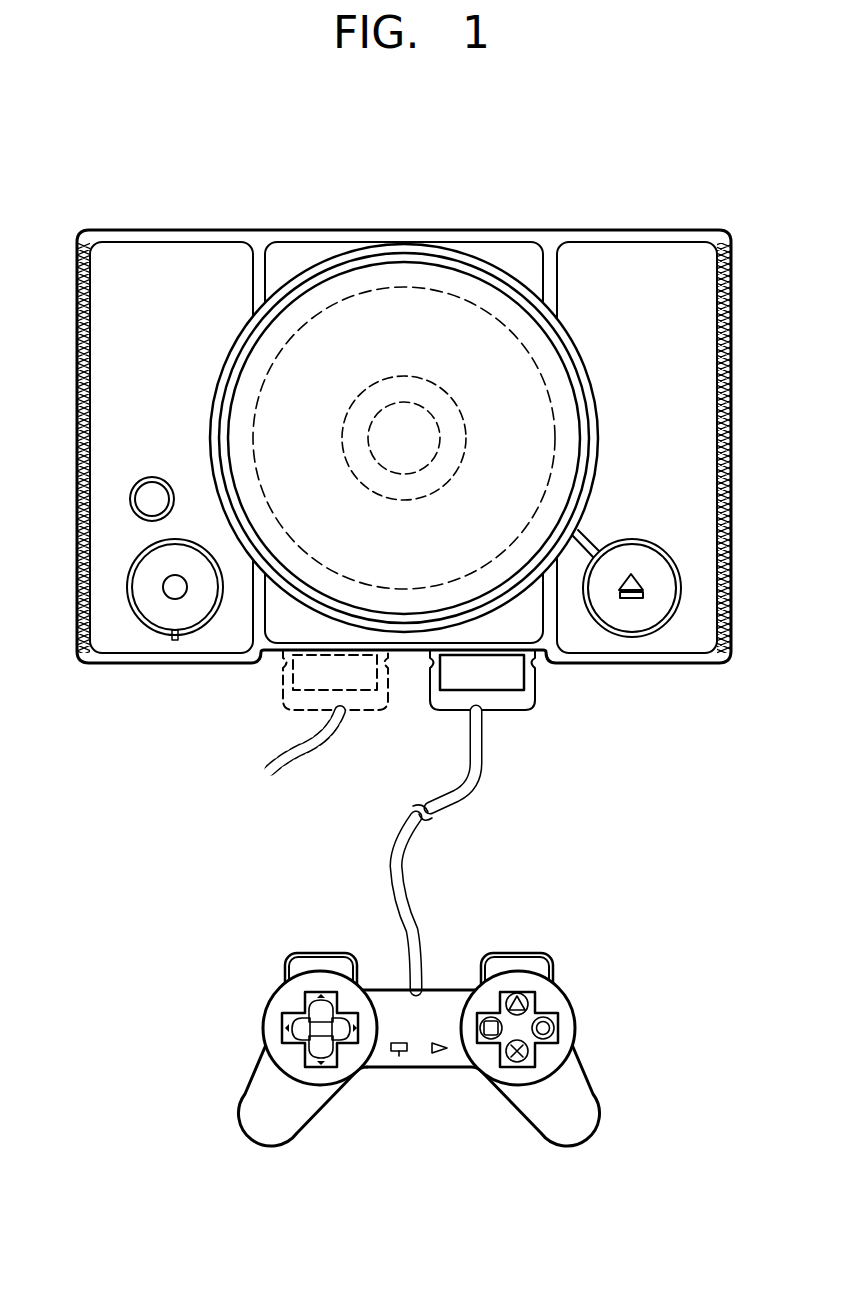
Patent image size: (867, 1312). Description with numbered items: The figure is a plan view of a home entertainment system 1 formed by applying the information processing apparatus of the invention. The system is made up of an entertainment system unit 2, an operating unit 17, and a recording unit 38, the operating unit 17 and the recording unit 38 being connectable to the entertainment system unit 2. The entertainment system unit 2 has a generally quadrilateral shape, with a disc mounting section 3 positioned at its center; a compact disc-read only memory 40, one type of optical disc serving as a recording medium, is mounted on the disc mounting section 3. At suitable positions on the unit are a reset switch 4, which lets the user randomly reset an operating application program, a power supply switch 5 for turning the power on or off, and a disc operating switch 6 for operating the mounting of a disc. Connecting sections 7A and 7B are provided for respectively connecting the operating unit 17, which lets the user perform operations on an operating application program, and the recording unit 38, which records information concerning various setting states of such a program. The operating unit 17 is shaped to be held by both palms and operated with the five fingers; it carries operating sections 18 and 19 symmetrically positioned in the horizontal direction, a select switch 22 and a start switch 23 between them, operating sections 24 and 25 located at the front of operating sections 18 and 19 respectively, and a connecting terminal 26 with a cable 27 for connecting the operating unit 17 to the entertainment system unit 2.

The entertainment system 1 is at (207, 220).
The entertainment system unit 2 is at (570, 221).
The disc mounting section 3 is at (401, 278).
The compact disc-read only memory (CD-ROM) 40 is at (341, 304).
The reset switch 4 is at (129, 499).
The power supply switch 5 is at (143, 594).
The disc operating switch 6 is at (664, 586).
The connecting section 7A is at (503, 643).
The connecting section 7B is at (292, 633).
The connecting terminal 26 is at (537, 692).
The recording unit 38 is at (517, 738).
The cable 27 is at (416, 831).
The operating unit 17 is at (589, 988).
The operating section 18 is at (293, 1006).
The operating section 19 is at (556, 1030).
The select switch 22 is at (400, 1056).
The start switch 23 is at (440, 1054).
The operating section 24 is at (322, 953).
The operating section 25 is at (517, 953).